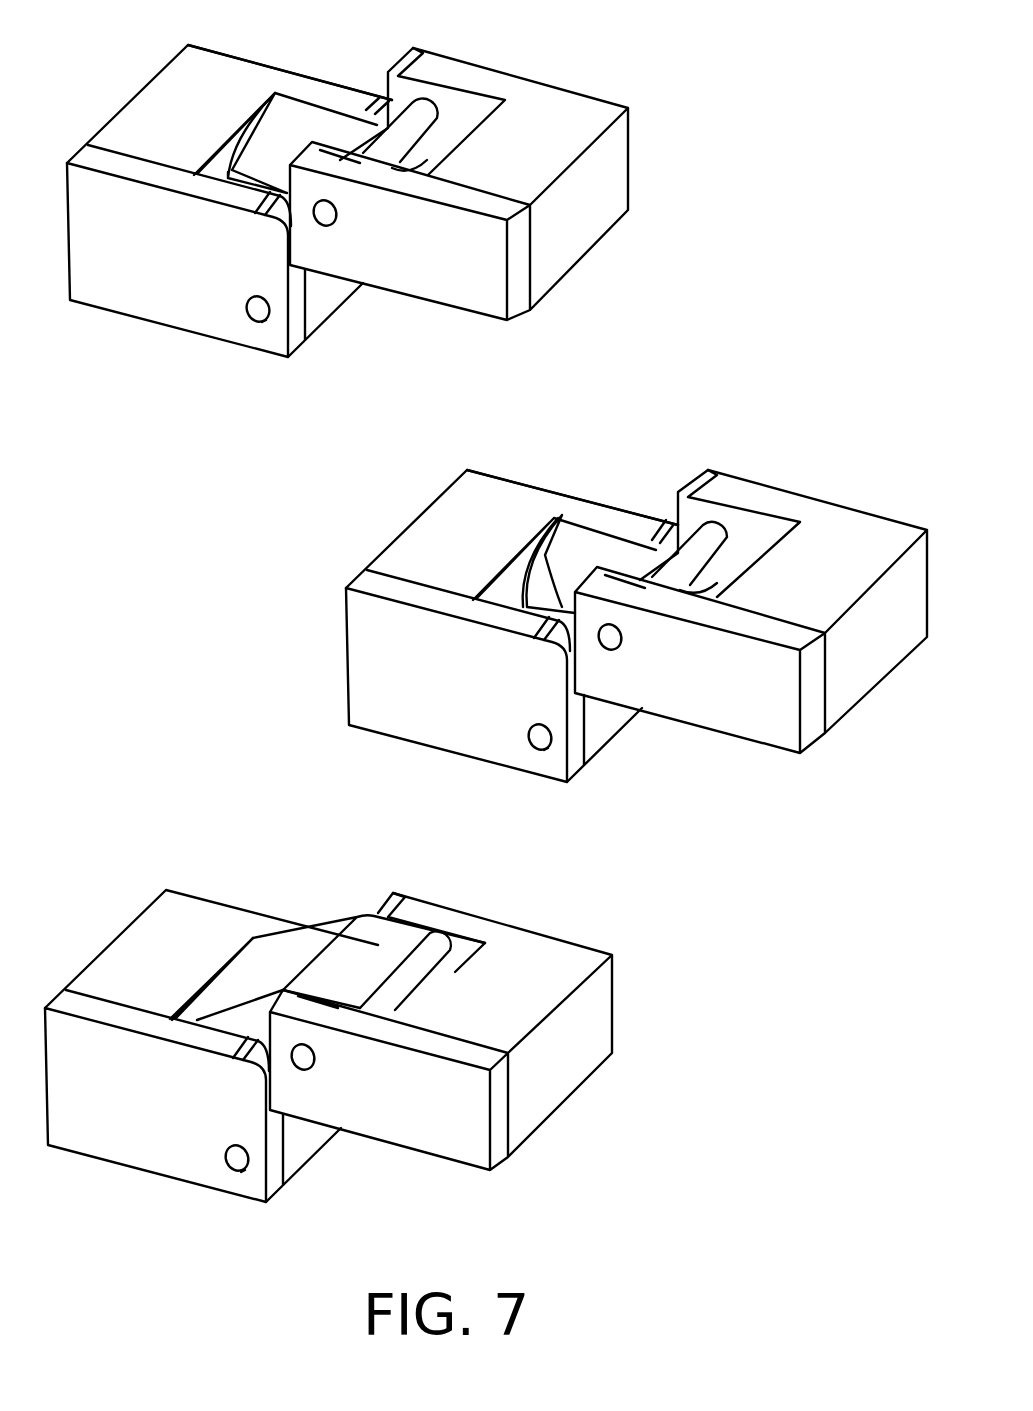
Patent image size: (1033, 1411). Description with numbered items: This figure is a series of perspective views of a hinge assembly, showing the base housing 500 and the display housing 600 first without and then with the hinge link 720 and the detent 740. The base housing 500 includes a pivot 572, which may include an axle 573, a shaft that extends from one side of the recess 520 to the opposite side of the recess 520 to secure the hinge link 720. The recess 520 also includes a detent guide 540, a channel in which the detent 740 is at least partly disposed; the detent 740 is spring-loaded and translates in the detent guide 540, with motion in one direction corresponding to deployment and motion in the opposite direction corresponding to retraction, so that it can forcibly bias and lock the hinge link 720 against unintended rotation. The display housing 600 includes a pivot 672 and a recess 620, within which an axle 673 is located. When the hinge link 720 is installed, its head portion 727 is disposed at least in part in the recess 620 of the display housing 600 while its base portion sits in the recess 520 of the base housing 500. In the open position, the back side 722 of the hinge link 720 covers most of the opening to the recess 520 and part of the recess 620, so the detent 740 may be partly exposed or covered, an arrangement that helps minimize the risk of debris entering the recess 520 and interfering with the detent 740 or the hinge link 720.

The base housing 500 is at (152, 271).
The display housing 600 is at (485, 279).
The recess 520 is at (310, 80).
The detent guide 540 is at (240, 153).
The pivot 572 is at (253, 316).
The axle 573 is at (264, 322).
The recess 620 is at (446, 132).
The pivot 672 is at (331, 226).
The axle 673 is at (432, 128).
The detent 740 is at (543, 552).
The hinge link 720 is at (344, 917).
The back side 722 is at (272, 962).
The head portion 727 is at (410, 985).